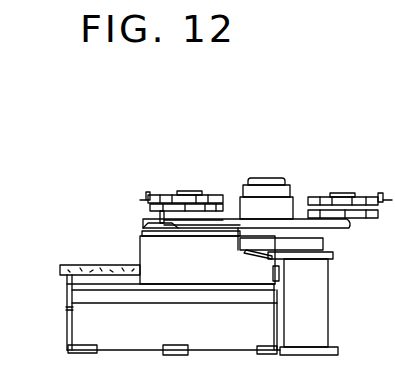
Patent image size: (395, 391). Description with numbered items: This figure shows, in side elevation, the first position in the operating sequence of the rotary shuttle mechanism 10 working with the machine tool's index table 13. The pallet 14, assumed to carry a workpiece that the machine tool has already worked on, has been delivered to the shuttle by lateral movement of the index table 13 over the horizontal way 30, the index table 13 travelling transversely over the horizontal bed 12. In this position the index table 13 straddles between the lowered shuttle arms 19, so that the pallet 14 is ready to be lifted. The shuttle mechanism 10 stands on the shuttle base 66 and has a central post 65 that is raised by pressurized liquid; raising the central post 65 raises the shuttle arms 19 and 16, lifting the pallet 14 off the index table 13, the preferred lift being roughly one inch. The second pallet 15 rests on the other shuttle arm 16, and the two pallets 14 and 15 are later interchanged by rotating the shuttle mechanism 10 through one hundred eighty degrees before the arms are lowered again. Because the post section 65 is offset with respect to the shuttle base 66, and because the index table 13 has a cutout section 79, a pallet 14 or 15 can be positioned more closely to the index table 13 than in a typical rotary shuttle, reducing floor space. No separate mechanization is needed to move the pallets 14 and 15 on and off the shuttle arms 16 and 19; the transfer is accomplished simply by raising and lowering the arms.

The rotary shuttle mechanism 10 is at (270, 165).
The horizontal bed 12 is at (103, 322).
The index table 13 is at (190, 269).
The pallet 14 is at (150, 199).
The pallet 15 is at (343, 193).
The shuttle arm 16 is at (345, 228).
The shuttle arm 19 is at (156, 220).
The horizontal way 30 is at (85, 265).
The central post 65 is at (239, 182).
The shuttle base 66 is at (313, 317).
The cutout section 79 is at (258, 253).